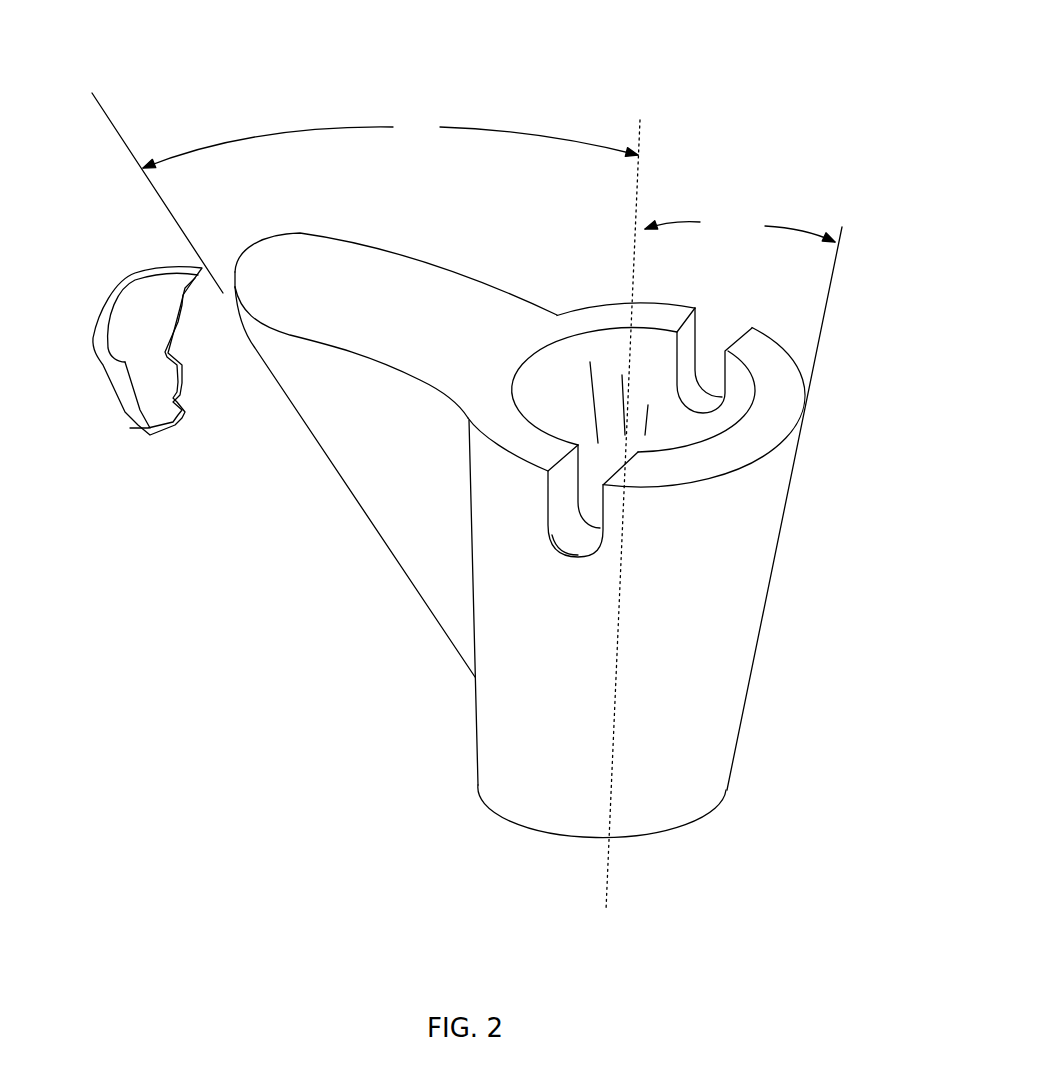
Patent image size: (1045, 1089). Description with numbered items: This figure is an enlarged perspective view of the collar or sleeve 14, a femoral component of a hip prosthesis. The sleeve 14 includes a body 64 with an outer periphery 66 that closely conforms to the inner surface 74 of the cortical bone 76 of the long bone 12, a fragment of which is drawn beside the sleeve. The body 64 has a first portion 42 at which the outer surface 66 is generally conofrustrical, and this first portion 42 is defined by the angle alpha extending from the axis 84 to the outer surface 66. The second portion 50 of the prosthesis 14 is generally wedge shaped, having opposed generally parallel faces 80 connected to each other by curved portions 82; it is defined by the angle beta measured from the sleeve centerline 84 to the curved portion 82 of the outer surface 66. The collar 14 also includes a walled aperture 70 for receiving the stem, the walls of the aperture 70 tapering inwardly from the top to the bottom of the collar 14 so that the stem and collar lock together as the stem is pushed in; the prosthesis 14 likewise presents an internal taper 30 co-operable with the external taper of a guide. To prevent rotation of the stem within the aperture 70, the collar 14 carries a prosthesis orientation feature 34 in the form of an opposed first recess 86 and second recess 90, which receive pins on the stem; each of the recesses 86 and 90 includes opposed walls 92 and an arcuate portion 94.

The long bone 12 is at (155, 310).
The prosthesis sleeve 14 is at (773, 120).
The internal taper 30 is at (518, 374).
The prosthesis orientation feature 34 is at (728, 323).
The first portion 42 is at (753, 663).
The second portion 50 is at (318, 456).
The body 64 is at (503, 815).
The outer periphery 66 is at (677, 753).
The walled aperture 70 is at (612, 333).
The inner surface 74 is at (108, 322).
The cortical bone 76 is at (145, 430).
The generally parallel faces 80 is at (388, 431).
The curved portion 82 is at (242, 256).
The axis 84 is at (641, 143).
The first recess 86 is at (547, 518).
The second recess 90 is at (692, 333).
The opposed walls 92 is at (568, 485).
The arcuate portion 94 is at (580, 547).